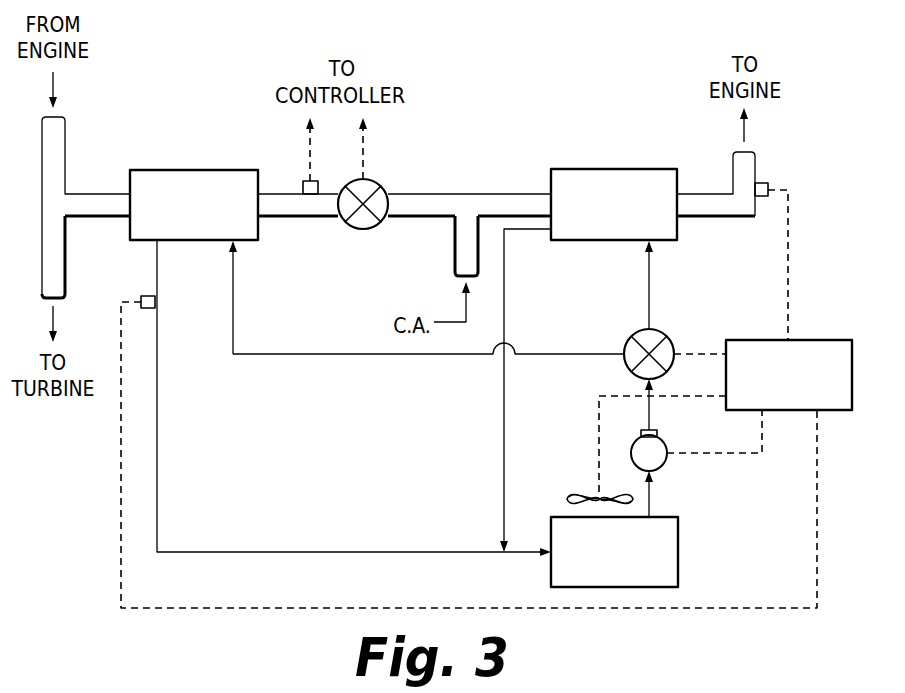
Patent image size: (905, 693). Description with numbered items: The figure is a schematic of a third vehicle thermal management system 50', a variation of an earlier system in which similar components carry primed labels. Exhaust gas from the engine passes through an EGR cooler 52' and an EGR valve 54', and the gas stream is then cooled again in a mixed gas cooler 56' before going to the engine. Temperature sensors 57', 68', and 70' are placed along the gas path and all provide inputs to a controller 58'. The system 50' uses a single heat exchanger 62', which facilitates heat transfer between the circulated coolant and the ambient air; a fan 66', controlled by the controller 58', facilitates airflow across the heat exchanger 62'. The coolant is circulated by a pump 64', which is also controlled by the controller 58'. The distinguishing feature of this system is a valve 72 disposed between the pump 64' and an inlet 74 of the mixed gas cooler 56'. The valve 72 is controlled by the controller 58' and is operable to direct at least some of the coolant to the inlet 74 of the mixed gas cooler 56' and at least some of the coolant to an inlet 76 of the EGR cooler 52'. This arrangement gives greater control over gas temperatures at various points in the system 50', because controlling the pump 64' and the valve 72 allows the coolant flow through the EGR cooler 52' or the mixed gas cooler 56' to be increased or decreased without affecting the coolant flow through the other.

The vehicle thermal management system 50' is at (637, 35).
The EGR cooler 52' is at (186, 184).
The EGR valve 54' is at (381, 197).
The mixed gas cooler 56' is at (614, 183).
The temperature sensor 57' is at (294, 156).
The controller 58' is at (789, 344).
The heat exchanger 62' is at (652, 552).
The pump 64' is at (680, 448).
The fan 66' is at (586, 473).
The temperature sensor 68' is at (124, 283).
The temperature sensor 70' is at (786, 171).
The valve 72 is at (633, 338).
The inlet of mixed gas cooler 74 is at (655, 243).
The inlet of EGR cooler 76 is at (237, 244).